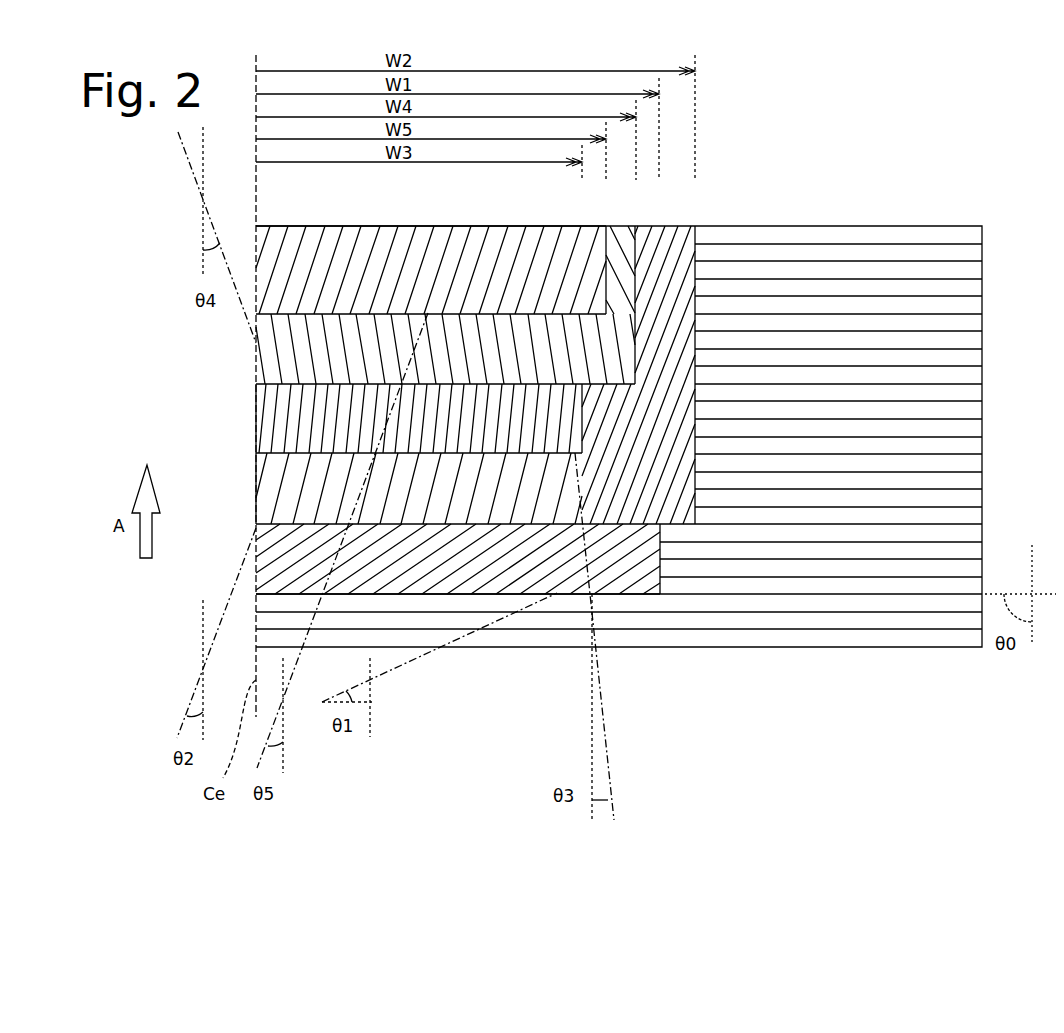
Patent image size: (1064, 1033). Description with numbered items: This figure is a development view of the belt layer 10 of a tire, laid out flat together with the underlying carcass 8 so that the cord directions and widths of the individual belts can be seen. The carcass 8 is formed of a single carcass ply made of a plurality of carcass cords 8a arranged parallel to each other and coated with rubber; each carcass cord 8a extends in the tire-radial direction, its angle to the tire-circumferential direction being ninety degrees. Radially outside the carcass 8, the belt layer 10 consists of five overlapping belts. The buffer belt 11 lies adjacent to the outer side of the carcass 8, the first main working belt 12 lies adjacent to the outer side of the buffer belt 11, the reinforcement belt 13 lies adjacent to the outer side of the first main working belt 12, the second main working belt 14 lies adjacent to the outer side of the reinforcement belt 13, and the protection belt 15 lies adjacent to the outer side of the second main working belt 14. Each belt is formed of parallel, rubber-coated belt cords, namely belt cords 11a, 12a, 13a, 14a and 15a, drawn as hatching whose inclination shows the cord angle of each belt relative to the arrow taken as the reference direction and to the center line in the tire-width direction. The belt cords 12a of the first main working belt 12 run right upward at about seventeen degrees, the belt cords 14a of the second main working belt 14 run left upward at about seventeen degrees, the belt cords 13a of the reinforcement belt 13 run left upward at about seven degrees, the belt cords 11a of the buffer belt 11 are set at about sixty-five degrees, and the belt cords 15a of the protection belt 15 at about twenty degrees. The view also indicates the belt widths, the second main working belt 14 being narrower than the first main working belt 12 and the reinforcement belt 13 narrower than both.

The carcass 8 is at (925, 633).
The carcass cord 8a is at (850, 633).
The belt layer 10 is at (243, 236).
The buffer belt 11 is at (627, 595).
The belt cord 11a is at (600, 595).
The first main working belt 12 is at (256, 456).
The belt cord 12a is at (262, 484).
The reinforcement belt 13 is at (256, 386).
The belt cord 13a is at (262, 414).
The second main working belt 14 is at (690, 273).
The belt cord 14a is at (625, 252).
The protection belt 15 is at (328, 240).
The belt cord 15a is at (368, 248).